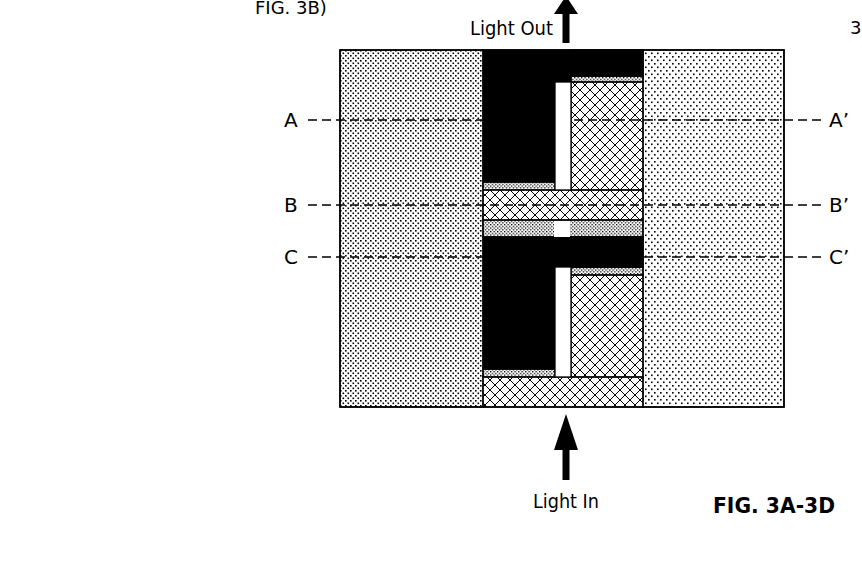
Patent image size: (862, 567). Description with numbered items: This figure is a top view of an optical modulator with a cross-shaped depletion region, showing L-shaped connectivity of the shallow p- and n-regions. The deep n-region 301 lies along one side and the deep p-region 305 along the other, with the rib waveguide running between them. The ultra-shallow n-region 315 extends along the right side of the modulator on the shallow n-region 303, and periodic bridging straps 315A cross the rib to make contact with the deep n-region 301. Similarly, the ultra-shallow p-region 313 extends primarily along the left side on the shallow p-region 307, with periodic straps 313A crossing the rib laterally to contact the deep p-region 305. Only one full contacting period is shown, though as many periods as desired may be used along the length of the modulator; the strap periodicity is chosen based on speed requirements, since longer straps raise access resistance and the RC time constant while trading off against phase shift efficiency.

The deep n-region 301 is at (435, 335).
The shallow n-region 303 is at (644, 86).
The deep p-region 305 is at (727, 335).
The shallow p-region 307 is at (483, 185).
The ultra-shallow p-region 313 is at (535, 96).
The straps 313A is at (627, 74).
The ultra-shallow n-region 315 is at (625, 165).
The straps 315A is at (530, 216).